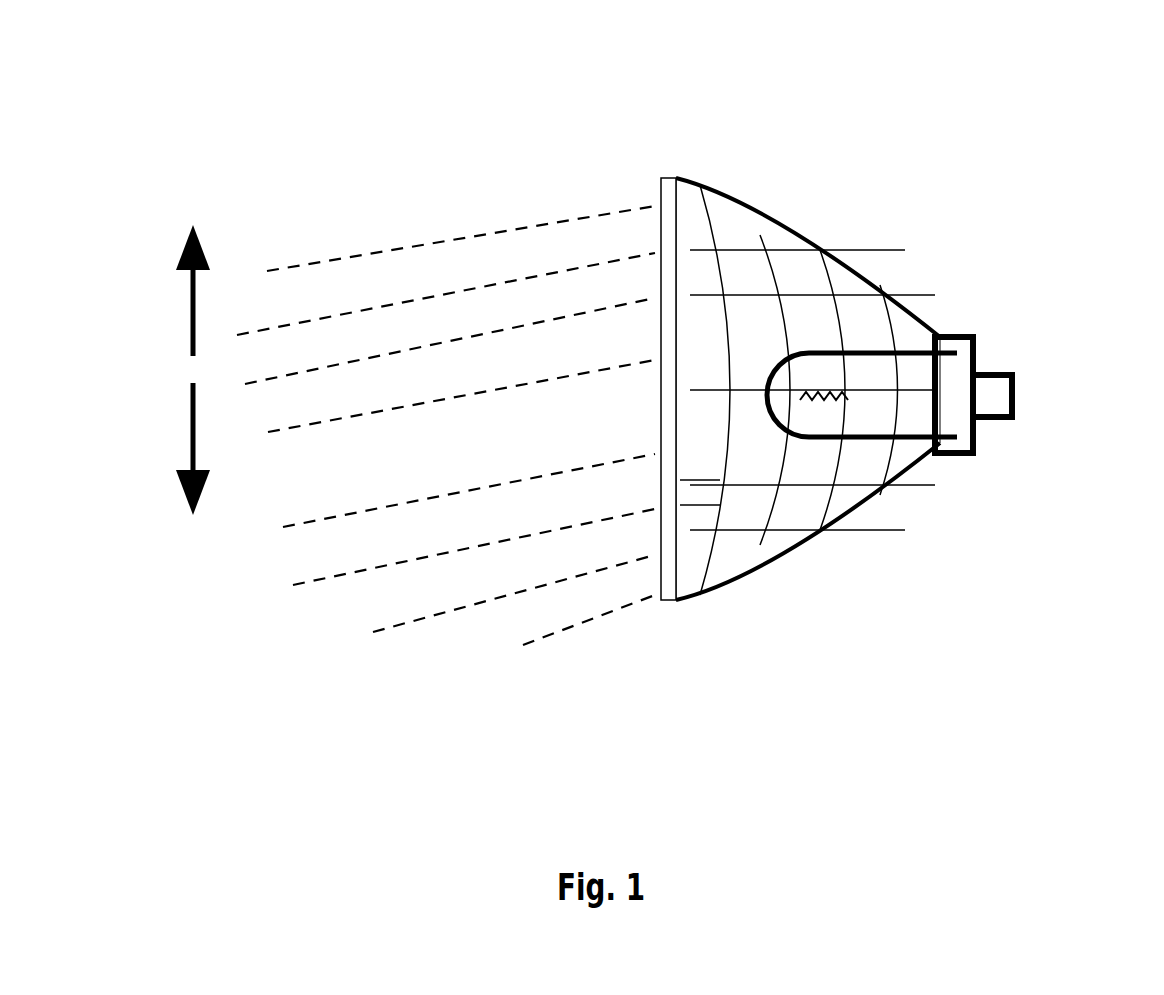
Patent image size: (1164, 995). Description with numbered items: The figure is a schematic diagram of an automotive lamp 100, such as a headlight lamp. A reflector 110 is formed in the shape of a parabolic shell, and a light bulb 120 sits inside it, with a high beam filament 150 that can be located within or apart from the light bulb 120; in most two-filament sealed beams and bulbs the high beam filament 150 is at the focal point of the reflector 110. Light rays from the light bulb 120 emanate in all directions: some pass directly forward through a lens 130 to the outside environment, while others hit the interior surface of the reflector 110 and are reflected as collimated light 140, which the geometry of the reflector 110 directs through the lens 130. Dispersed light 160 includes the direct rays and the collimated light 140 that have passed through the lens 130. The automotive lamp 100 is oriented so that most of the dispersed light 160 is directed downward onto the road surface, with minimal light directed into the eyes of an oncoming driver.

The automotive lamp 100 is at (463, 100).
The reflector 110 is at (788, 194).
The light bulb 120 is at (978, 252).
The lens 130 is at (642, 580).
The collimated light 140 is at (727, 528).
The high beam filament 150 is at (945, 549).
The dispersed light 160 is at (342, 610).